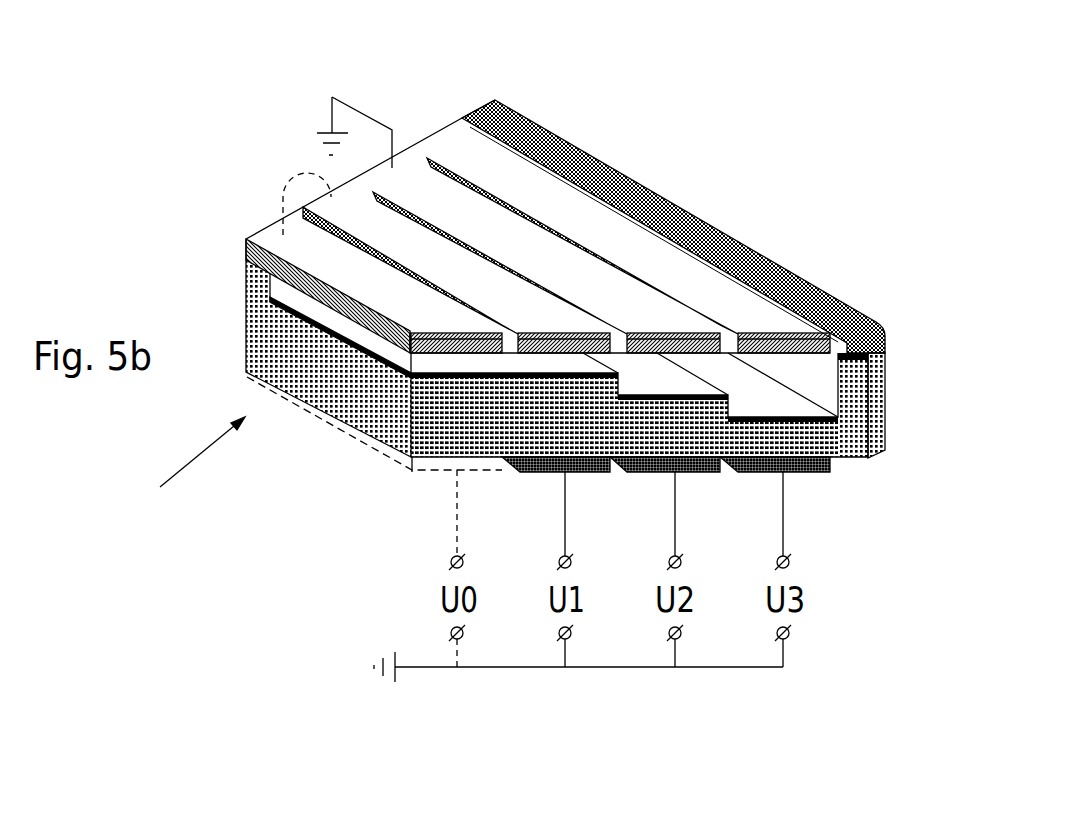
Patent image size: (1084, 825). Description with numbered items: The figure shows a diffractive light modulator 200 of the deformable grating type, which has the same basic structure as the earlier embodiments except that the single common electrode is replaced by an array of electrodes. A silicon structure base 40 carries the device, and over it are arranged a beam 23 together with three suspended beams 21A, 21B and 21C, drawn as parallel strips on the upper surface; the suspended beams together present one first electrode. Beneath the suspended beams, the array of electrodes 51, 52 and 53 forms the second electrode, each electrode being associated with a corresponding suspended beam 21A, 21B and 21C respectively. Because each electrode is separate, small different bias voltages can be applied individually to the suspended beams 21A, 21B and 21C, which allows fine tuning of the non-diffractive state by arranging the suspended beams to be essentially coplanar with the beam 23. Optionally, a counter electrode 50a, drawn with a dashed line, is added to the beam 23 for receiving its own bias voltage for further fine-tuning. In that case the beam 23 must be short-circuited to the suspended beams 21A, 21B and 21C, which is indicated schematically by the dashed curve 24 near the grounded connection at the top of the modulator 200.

The dashed curve 24 is at (295, 177).
The beam 23 is at (372, 282).
The suspended beam 21A is at (577, 327).
The suspended beam 21B is at (535, 252).
The suspended beam 21C is at (505, 170).
The silicon structure base 40 is at (362, 377).
The counter electrode 50a is at (402, 465).
The electrode 51 is at (557, 472).
The electrode 52 is at (667, 472).
The electrode 53 is at (777, 472).
The diffractive light modulator 200 is at (191, 474).